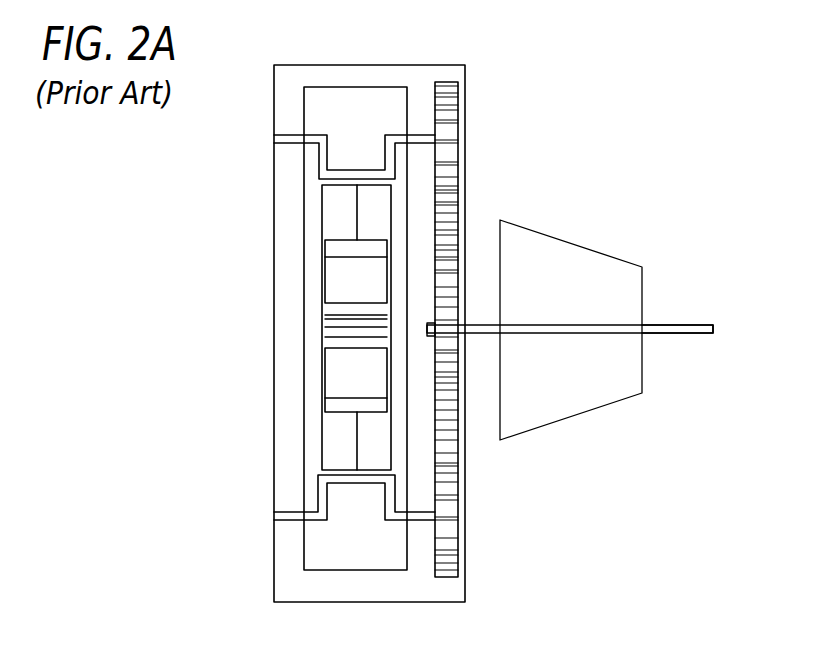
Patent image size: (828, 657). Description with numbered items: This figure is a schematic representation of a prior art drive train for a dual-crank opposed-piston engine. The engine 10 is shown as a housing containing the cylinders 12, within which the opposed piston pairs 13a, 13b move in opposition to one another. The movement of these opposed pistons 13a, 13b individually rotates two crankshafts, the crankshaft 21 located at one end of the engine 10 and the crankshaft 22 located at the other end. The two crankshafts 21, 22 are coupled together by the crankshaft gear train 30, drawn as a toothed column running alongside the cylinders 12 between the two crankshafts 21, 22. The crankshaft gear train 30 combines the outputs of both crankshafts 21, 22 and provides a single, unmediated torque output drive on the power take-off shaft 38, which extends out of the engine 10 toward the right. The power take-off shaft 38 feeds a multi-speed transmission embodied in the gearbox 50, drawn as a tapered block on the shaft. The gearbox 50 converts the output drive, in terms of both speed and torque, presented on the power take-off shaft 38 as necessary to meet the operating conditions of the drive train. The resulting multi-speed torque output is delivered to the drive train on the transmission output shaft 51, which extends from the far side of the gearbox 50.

The engine 10 is at (312, 64).
The crankshaft 21 is at (292, 135).
The crankshaft 22 is at (297, 513).
The cylinders 12 is at (322, 227).
The opposed piston 13a is at (338, 283).
The opposed piston 13b is at (338, 363).
The crankshaft gear train 30 is at (459, 174).
The power take-off (PTO) shaft 38 is at (483, 334).
The gearbox 50 is at (588, 248).
The transmission output shaft 51 is at (667, 334).